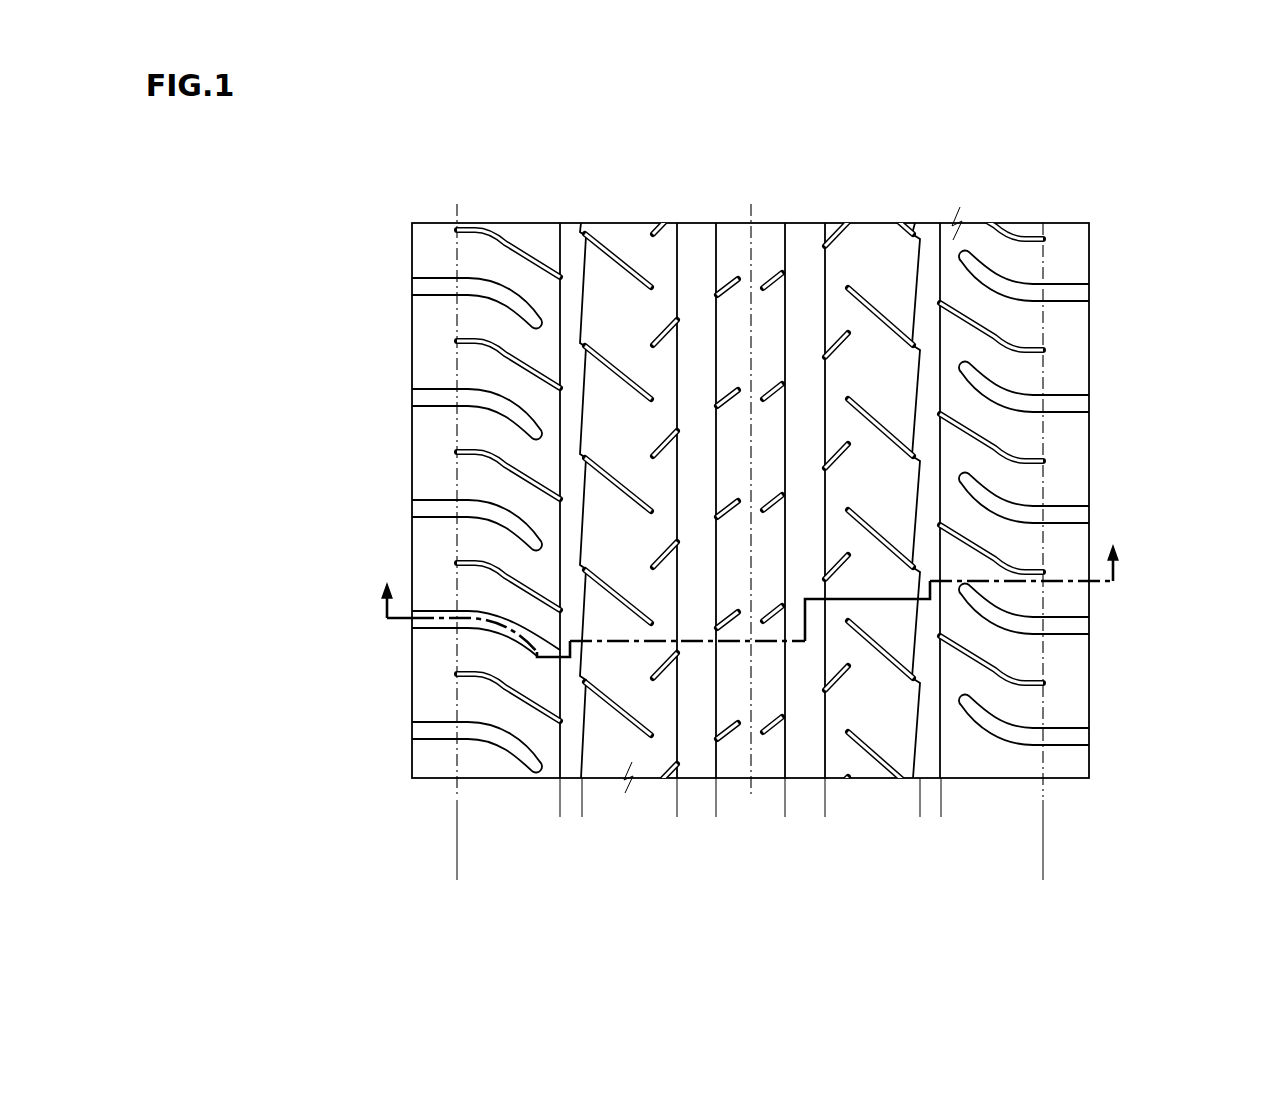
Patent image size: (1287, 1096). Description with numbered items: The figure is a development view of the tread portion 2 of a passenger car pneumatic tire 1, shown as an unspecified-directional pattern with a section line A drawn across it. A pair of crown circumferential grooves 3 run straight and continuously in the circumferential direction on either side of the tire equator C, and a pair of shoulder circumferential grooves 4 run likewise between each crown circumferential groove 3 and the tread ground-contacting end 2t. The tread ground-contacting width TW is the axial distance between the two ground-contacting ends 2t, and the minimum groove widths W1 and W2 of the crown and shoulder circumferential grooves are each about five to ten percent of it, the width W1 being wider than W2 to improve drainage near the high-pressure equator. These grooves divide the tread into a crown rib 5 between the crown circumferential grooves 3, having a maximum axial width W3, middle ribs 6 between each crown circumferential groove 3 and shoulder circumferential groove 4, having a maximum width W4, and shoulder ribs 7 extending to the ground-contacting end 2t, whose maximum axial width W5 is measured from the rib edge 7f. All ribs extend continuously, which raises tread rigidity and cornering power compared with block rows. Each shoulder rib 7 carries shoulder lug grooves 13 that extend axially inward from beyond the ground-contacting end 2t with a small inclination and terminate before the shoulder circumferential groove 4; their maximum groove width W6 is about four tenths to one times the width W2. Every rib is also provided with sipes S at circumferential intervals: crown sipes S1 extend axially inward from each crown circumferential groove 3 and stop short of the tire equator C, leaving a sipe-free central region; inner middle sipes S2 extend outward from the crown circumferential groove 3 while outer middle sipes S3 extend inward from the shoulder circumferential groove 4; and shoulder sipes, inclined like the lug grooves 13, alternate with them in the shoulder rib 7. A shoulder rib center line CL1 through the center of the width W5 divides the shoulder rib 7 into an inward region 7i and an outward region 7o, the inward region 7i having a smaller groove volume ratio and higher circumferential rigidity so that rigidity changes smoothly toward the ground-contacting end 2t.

The pneumatic tire 1 is at (1122, 188).
The tread portion 2 is at (750, 500).
The crown circumferential groove 3 is at (751, 500).
The shoulder circumferential groove 4 is at (750, 500).
The crown rib 5 is at (750, 500).
The middle rib 6 is at (750, 500).
The shoulder rib 7 is at (750, 456).
The outward region 7o is at (472, 238).
The inward region 7i is at (541, 238).
The rib edge 7f is at (556, 330).
The shoulder lug groove 13 is at (750, 511).
The crown sipe S1 is at (749, 506).
The inner middle sipe S2 is at (750, 505).
The outer middle sipe S3 is at (749, 483).
The sipe S is at (1210, 444).
The tire equator C is at (751, 487).
The shoulder rib center line CL1 is at (510, 797).
The tread ground-contacting end 2t is at (1095, 853).
The tread ground-contacting width TW is at (457, 870).
The groove width of crown circumferential groove W1 is at (857, 812).
The groove width of shoulder circumferential groove W2 is at (888, 812).
The maximum axial width of crown rib W3 is at (785, 812).
The maximum width of middle rib W4 is at (677, 812).
The maximum axial width of shoulder rib W5 is at (560, 812).
The maximum groove width of shoulder lug groove W6 is at (1037, 746).
The section line A- A is at (751, 600).